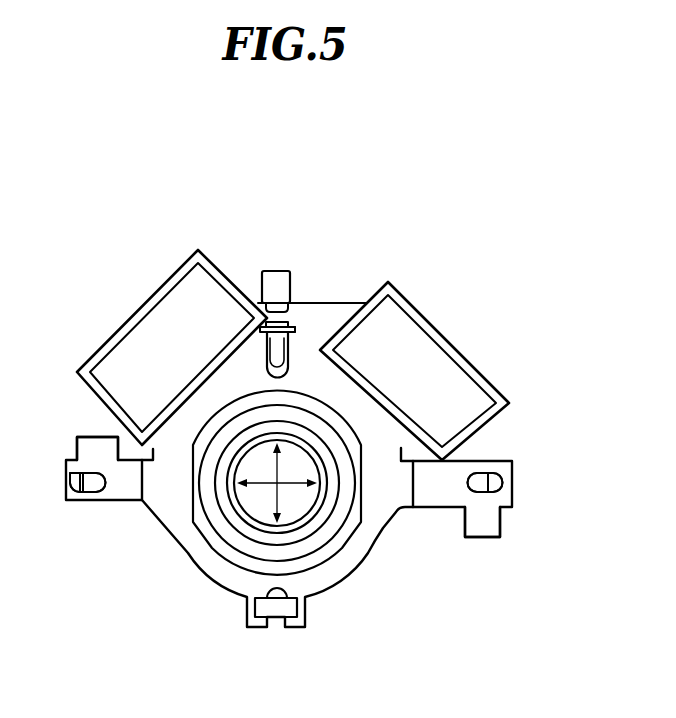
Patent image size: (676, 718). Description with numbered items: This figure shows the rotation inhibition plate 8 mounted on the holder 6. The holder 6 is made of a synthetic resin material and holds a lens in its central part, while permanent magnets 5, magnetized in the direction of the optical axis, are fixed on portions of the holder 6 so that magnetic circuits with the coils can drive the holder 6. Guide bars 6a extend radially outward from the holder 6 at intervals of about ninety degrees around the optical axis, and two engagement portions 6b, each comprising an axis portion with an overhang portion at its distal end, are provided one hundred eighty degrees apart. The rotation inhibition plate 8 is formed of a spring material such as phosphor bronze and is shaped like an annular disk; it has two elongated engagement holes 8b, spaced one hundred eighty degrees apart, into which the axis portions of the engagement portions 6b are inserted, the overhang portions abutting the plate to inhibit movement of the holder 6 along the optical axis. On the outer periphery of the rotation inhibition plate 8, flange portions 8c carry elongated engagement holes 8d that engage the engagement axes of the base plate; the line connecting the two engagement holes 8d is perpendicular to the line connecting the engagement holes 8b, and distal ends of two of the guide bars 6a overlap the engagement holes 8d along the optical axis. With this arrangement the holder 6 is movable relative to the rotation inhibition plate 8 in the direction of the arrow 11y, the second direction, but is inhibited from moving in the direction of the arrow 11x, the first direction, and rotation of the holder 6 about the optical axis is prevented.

The permanent magnet 5 is at (183, 286).
The holder 6 is at (223, 533).
The guide bar 6a is at (276, 280).
The engagement portion 6b is at (278, 360).
The rotation inhibition plate 8 is at (392, 462).
The engagement hole 8b is at (295, 343).
The flange portion 8c is at (85, 445).
The engagement hole 8d is at (493, 482).
The arrow 11x is at (302, 486).
The arrow 11y is at (283, 508).